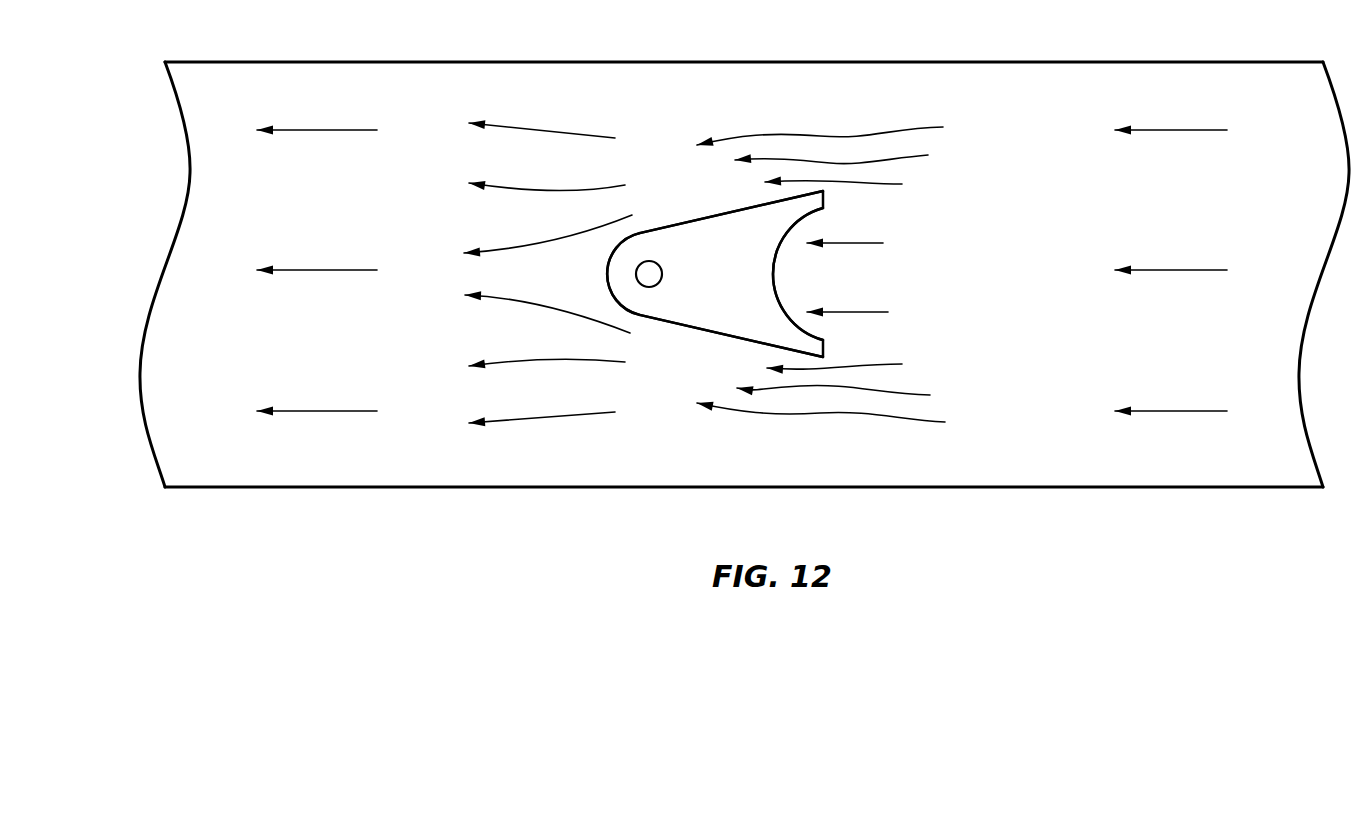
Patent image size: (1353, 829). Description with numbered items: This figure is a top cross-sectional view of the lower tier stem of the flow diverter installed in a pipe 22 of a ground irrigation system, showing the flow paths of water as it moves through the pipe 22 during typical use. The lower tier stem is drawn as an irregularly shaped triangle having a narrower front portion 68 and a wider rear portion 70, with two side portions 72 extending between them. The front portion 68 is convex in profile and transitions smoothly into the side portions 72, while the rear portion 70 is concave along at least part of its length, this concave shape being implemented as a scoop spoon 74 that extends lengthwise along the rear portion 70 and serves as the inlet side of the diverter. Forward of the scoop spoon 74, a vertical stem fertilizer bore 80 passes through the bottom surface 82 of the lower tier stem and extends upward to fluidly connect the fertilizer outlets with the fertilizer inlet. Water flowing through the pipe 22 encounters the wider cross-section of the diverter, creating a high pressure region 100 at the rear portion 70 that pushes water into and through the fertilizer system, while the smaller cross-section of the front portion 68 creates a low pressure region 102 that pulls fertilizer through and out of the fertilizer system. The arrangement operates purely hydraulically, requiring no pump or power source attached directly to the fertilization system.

The pipe 22 is at (1025, 61).
The front portion 68 is at (605, 273).
The rear portion 70 is at (834, 274).
The side portions 72 is at (712, 213).
The scoop spoon 74 is at (773, 288).
The vertical stem fertilizer bore 80 is at (649, 274).
The bottom surface 82 is at (698, 253).
The high pressure region 100 is at (905, 288).
The low pressure region 102 is at (545, 275).